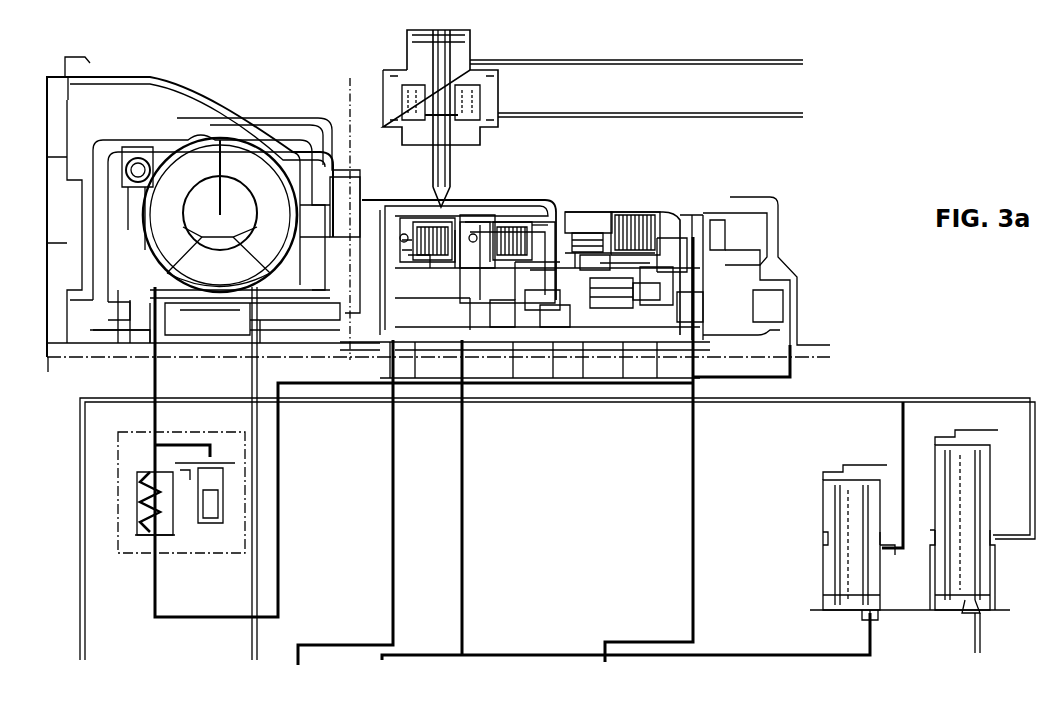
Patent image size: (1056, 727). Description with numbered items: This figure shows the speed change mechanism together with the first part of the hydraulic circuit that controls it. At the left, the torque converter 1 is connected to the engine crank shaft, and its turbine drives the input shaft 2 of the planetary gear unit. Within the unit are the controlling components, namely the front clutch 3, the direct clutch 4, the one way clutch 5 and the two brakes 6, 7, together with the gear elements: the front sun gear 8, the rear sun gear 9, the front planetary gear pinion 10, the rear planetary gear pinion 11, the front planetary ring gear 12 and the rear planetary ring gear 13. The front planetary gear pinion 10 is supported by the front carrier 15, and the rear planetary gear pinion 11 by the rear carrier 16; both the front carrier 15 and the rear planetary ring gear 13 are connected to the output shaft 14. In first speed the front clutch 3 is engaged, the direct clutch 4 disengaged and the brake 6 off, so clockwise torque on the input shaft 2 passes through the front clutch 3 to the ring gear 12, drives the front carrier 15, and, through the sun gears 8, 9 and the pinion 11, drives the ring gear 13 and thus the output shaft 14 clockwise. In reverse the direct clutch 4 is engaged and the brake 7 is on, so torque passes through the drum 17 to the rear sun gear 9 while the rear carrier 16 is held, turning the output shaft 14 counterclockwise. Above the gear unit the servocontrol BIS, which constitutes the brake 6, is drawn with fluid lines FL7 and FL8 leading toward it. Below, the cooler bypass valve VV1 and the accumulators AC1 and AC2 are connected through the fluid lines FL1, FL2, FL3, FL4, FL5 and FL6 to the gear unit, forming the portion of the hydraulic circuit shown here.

The torque converter 1 is at (209, 181).
The input shaft 2 is at (295, 356).
The front clutch 3 is at (520, 216).
The direct clutch 4 is at (422, 215).
The one way clutch 5 is at (595, 220).
The brake 6 is at (433, 219).
The brake 7 is at (630, 216).
The front sun gear 8 is at (539, 362).
The rear sun gear 9 is at (611, 356).
The front planetary gear pinion 10 is at (557, 369).
The rear planetary gear pinion 11 is at (642, 358).
The front planetary ring gear 12 is at (607, 219).
The rear planetary ring gear 13 is at (671, 246).
The output shaft 14 is at (761, 287).
The front carrier 15 is at (496, 367).
The rear carrier 16 is at (632, 210).
The drum 17 is at (485, 219).
The servocontrol BIS is at (473, 113).
The fluid line 1 FL1 is at (551, 546).
The fluid line 2 FL2 is at (424, 490).
The fluid line 3 FL3 is at (339, 517).
The fluid line 4 FL4 is at (618, 517).
The fluid line 5 FL5 is at (744, 465).
The fluid line 6 FL6 is at (973, 651).
The fluid line 7 FL7 is at (656, 62).
The fluid line 8 FL8 is at (670, 114).
The cooler bypass valve VV1 is at (170, 513).
The accumulator 1 AC1 is at (887, 542).
The accumulator 2 AC2 is at (979, 521).